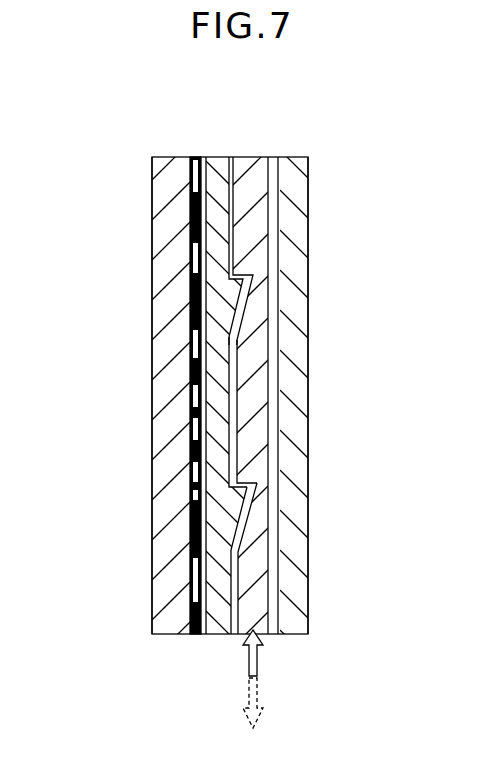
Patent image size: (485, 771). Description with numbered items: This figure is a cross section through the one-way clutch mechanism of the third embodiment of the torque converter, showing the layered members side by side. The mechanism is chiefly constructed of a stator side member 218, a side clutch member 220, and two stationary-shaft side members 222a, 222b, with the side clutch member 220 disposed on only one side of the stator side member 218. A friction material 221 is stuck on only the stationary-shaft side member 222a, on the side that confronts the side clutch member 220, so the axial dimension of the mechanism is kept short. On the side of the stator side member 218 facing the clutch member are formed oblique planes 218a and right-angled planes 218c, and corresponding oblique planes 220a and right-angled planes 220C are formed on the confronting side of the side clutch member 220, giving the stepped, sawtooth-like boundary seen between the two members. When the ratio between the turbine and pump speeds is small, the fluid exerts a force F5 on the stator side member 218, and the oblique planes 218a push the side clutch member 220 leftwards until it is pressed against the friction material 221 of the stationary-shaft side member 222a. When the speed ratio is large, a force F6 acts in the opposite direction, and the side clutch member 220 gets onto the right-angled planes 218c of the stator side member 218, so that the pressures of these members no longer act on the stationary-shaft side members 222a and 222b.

The stationary-shaft side member 222a is at (172, 178).
The side clutch member 220 is at (217, 172).
The stator side member 218 is at (253, 167).
The stationary-shaft side member 222b is at (296, 162).
The friction material 221 is at (186, 353).
The right-angled planes 220C is at (224, 490).
The right-angled planes 218c is at (252, 470).
The oblique planes 220a is at (218, 529).
The oblique planes 218a is at (258, 526).
The force F5 is at (258, 661).
The force F6 is at (259, 697).